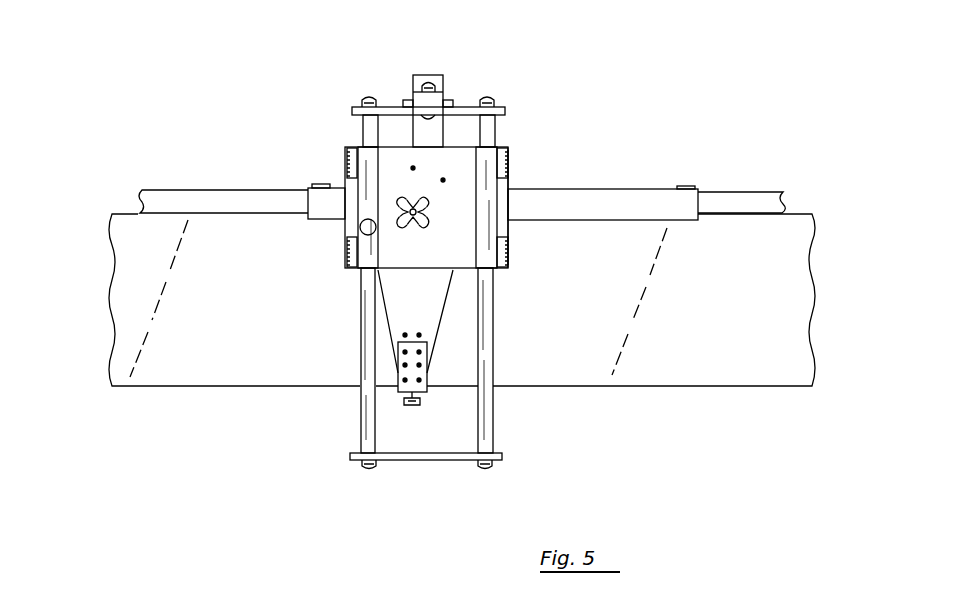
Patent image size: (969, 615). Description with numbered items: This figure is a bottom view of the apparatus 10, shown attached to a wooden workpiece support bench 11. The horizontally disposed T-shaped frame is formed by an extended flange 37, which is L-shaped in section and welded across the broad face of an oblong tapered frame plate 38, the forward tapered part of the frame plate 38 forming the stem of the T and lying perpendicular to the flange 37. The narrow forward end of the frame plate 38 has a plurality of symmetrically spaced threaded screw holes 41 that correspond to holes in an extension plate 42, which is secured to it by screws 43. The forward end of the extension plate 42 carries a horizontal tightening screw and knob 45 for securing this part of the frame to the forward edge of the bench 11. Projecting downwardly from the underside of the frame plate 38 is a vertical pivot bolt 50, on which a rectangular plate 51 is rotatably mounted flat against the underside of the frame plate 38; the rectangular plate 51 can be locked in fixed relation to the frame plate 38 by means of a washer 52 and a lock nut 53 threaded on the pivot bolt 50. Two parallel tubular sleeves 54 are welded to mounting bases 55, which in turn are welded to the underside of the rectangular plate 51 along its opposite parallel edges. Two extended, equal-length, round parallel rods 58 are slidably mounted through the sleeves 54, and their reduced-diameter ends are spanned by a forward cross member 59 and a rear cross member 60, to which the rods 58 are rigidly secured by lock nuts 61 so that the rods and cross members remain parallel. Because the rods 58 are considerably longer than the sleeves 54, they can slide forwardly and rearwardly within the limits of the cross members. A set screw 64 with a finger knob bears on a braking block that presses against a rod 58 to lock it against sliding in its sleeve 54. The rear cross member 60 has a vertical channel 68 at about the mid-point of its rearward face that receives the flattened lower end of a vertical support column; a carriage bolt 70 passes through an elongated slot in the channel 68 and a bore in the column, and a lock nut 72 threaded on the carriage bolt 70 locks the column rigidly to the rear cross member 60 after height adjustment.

The apparatus 10 is at (285, 110).
The workpiece support bench 11 is at (195, 403).
The extended flange 37 is at (625, 190).
The frame plate 38 is at (442, 318).
The screw holes 41 is at (403, 336).
The extension plate 42 is at (427, 380).
The screws 43 is at (403, 365).
The horizontal tightening screw and knob 45 is at (410, 406).
The vertical pivot bolt 50 is at (412, 226).
The rectangular plate 51 is at (510, 232).
The washer 52 is at (399, 210).
The lock nut 53 is at (425, 202).
The tubular sleeves 54 is at (368, 157).
The mounting bases 55 is at (348, 155).
The rods 58 is at (361, 410).
The forward cross member 59 is at (428, 461).
The rear cross member 60 is at (392, 107).
The lock nuts 61 is at (367, 100).
The set screw 64 is at (360, 227).
The vertical channel 68 is at (444, 102).
The carriage bolt 70 is at (434, 118).
The lock nut 72 is at (428, 77).